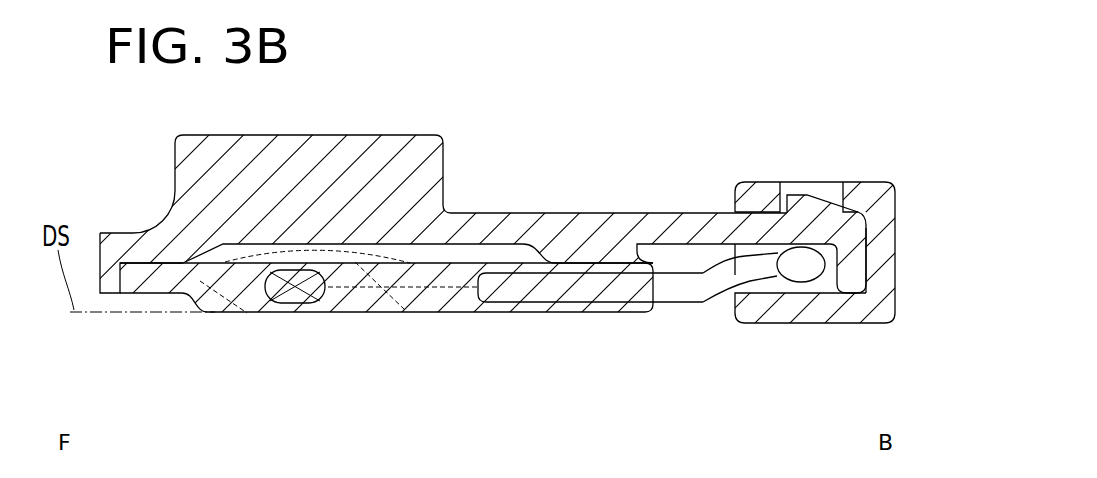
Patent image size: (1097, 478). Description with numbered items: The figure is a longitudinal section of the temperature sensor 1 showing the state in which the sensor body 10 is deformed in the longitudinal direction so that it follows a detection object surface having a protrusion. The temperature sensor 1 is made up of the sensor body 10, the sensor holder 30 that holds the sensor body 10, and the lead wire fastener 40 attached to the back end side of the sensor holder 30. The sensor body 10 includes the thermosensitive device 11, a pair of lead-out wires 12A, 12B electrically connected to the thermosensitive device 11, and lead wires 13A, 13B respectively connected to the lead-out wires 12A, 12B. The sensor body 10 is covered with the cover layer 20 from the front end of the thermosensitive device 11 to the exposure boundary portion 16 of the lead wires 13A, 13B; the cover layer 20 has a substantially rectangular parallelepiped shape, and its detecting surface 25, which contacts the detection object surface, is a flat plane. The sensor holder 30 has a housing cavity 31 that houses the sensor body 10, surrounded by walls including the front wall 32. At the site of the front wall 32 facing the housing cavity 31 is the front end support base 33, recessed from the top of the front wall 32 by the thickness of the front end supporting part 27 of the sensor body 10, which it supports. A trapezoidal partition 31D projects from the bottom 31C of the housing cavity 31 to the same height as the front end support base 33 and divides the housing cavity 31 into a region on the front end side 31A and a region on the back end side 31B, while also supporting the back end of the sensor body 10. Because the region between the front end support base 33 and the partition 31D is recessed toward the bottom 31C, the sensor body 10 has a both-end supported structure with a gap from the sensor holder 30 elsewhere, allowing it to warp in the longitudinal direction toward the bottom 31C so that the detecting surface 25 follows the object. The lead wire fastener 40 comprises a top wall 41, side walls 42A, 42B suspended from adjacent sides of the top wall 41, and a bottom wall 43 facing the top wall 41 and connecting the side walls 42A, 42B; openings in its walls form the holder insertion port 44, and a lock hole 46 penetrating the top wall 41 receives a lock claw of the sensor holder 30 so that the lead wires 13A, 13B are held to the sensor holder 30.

The temperature sensor 1 is at (573, 150).
The sensor body 10 is at (247, 325).
The thermosensitive device 11 is at (286, 302).
The lead-out wire 12A is at (430, 300).
The lead-out wire 12B is at (339, 342).
The lead wire 13A is at (543, 313).
The lead wire 13B is at (565, 291).
The exposure boundary portion 16 is at (668, 292).
The cover layer 20 is at (330, 296).
The detecting surface 25 is at (508, 313).
The front end supporting part 27 is at (153, 295).
The sensor holder 30 is at (510, 210).
The housing cavity 31 is at (470, 253).
The region on a front end side 31A is at (389, 232).
The region on a back end side 31B is at (677, 268).
The bottom of the housing cavity 31C is at (442, 240).
The partition 31D is at (657, 253).
The front wall 32 is at (100, 272).
The front end support base 33 is at (140, 267).
The lead wire fastener 40 is at (875, 179).
The top wall 41 is at (768, 173).
The side wall 42A is at (722, 207).
The side wall 42B is at (897, 222).
The bottom wall 43 is at (797, 325).
The holder insertion port 44 is at (715, 286).
The lock hole 46 is at (825, 190).